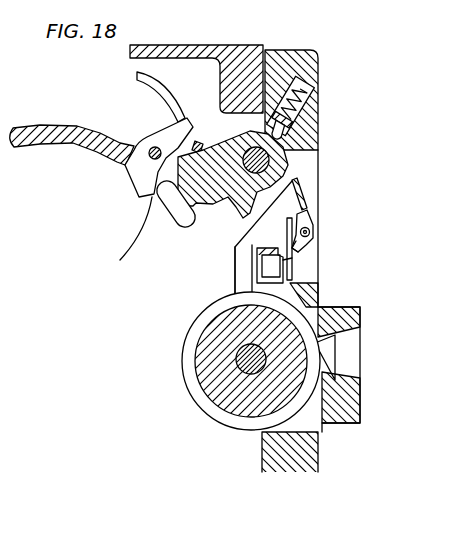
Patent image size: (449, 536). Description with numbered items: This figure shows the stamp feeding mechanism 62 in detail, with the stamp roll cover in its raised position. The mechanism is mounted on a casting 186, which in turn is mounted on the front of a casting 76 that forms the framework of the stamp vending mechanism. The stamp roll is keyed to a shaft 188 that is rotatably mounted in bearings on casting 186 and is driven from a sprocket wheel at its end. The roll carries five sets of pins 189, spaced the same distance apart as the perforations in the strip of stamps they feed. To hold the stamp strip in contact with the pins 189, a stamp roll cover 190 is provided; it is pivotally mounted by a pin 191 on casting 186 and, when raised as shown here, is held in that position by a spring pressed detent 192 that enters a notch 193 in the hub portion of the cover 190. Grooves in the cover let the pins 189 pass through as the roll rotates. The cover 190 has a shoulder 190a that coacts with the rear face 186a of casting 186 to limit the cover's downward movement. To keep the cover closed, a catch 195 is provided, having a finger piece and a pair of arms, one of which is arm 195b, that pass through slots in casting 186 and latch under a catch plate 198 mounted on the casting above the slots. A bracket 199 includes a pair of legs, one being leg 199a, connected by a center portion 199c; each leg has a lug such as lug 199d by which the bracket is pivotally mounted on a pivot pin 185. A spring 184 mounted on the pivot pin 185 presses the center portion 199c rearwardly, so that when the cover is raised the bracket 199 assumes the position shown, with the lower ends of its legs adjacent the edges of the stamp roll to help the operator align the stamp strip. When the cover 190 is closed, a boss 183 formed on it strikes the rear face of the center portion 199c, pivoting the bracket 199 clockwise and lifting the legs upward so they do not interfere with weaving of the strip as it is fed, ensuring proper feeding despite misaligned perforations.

The casting 76 is at (212, 44).
The casting 186 is at (308, 63).
The spring pressed detent 192 is at (315, 113).
The stamp feeding mechanism 62 is at (321, 128).
The stamp roll cover 190 is at (74, 120).
The catch 195 is at (193, 80).
The pin 191 is at (237, 143).
The boss 183 is at (224, 268).
The notch 193 is at (288, 158).
The arm 195b is at (178, 215).
The shoulder 190a is at (115, 239).
The catch plate 198 is at (292, 247).
The center portion 199c is at (300, 183).
The bracket 199 is at (322, 203).
The pivot pin 185 is at (311, 231).
The lug 199d is at (299, 251).
The spring 184 is at (293, 250).
The leg 199a is at (235, 249).
The rear face 186a is at (252, 261).
The pins 189 is at (195, 313).
The shaft 188 is at (246, 356).